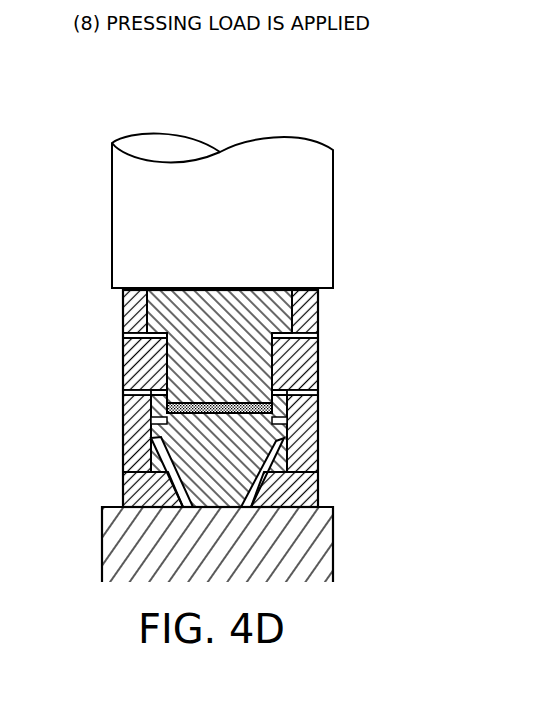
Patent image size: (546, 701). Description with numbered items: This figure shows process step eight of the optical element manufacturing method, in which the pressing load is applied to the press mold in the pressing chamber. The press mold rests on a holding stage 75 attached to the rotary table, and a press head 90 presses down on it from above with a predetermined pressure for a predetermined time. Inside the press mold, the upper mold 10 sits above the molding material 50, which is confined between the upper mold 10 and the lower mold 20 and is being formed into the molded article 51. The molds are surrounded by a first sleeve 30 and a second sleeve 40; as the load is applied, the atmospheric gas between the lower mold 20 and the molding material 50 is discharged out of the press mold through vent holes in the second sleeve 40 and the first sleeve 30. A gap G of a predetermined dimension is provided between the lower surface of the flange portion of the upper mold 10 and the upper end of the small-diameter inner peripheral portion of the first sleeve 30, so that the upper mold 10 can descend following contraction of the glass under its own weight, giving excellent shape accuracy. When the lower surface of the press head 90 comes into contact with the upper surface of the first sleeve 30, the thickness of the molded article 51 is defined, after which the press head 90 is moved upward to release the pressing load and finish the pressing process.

The upper mold 10 is at (318, 322).
The lower mold 20 is at (123, 492).
The first sleeve 30 is at (123, 297).
The second sleeve 40 is at (318, 440).
The molding material 50 is at (139, 410).
The molded article 51 is at (219, 408).
The holding stage 75 is at (315, 550).
The press head 90 is at (143, 263).
The gap G is at (123, 322).